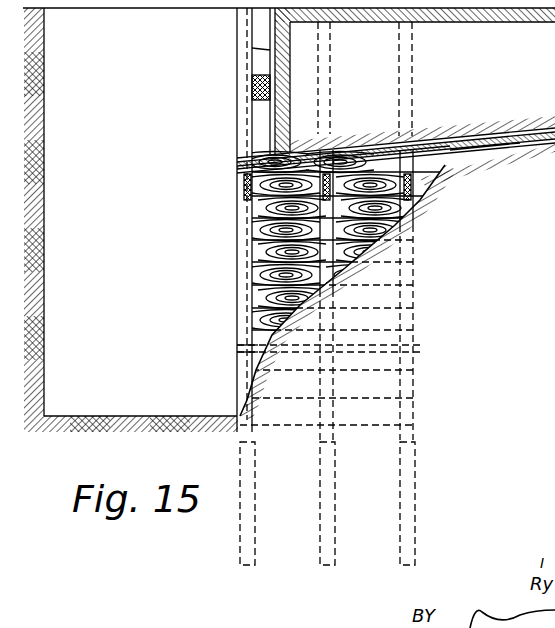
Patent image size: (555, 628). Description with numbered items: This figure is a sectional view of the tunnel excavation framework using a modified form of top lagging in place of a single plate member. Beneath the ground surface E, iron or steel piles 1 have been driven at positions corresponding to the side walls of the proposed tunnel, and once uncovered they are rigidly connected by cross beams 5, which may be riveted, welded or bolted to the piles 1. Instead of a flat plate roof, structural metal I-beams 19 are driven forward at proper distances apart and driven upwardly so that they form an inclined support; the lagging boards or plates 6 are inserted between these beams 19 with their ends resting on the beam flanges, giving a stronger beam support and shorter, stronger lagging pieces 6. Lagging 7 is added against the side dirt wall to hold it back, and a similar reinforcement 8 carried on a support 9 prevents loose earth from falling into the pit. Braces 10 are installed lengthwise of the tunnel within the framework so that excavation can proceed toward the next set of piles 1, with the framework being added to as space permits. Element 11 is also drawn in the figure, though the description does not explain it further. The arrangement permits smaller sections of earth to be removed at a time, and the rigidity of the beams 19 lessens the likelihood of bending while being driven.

The piles 1 is at (250, 481).
The cross beams 5 is at (244, 186).
The lagging 6 is at (445, 128).
The lagging 7 is at (295, 258).
The reinforcement 8 is at (272, 49).
The support 9 is at (258, 86).
The braces 10 is at (242, 348).
The bearing plate 11 is at (338, 136).
The I-beams 19 is at (515, 146).
The ground surface E is at (136, 10).